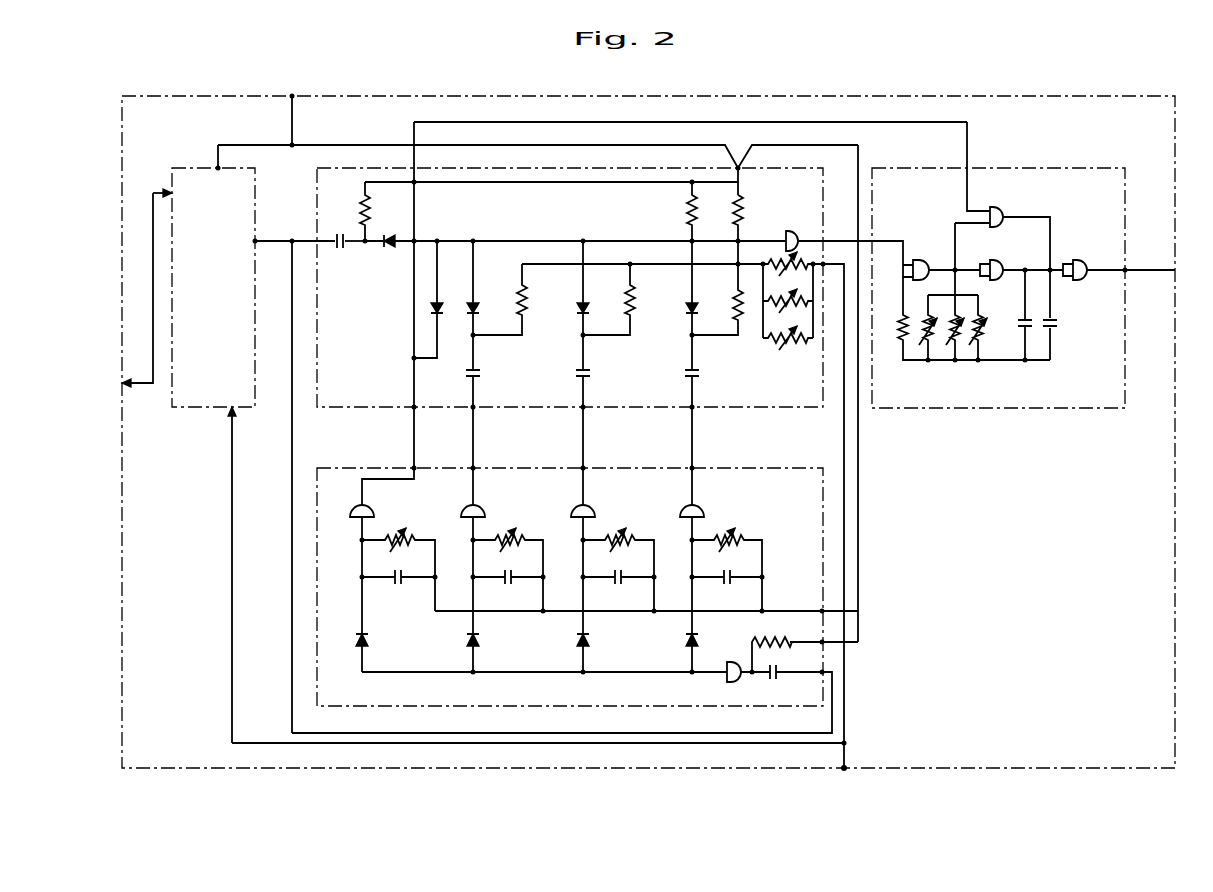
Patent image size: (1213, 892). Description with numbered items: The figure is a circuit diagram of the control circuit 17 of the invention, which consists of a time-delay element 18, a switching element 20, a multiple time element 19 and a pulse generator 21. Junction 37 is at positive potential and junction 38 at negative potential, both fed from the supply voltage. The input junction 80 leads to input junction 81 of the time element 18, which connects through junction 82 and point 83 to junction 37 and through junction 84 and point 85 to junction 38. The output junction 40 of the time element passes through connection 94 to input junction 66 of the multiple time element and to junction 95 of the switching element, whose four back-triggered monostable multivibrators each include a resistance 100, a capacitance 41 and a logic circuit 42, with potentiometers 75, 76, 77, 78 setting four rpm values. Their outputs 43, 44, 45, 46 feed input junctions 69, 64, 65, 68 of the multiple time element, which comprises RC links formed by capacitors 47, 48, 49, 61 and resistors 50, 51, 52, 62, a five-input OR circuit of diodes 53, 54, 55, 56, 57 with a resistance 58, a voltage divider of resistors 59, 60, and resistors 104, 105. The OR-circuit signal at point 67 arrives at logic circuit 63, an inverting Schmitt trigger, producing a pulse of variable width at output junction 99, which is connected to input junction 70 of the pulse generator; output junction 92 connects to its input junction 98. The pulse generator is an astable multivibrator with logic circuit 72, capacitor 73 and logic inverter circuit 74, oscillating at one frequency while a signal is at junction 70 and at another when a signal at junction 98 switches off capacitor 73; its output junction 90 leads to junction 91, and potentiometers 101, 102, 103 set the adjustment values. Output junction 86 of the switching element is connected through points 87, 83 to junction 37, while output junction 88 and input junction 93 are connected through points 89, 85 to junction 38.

The control circuit 17 is at (1073, 767).
The time-delay element 18 is at (174, 406).
The multiple time element 19 is at (570, 287).
The switching element 20 is at (819, 473).
The pulse generator 21 is at (1121, 172).
The output junction 37 is at (294, 99).
The output junction 38 is at (846, 767).
The output junction 40 is at (257, 247).
The capacitance 41 is at (775, 678).
The logic circuit 42 is at (736, 681).
The output junction 43 is at (694, 470).
The output junction 44 is at (585, 470).
The output junction 45 is at (475, 470).
The output junction 46 is at (414, 470).
The capacitor 47 is at (696, 376).
The capacitor 48 is at (587, 376).
The capacitor 49 is at (476, 376).
The resistor 50 is at (525, 298).
The resistor 51 is at (633, 298).
The resistor 52 is at (735, 300).
The diode 53 is at (690, 311).
The diode 54 is at (580, 311).
The diode 55 is at (475, 306).
The diode 56 is at (439, 306).
The diode 57 is at (391, 237).
The resistance 58 is at (689, 204).
The resistor 59 is at (752, 229).
The resistor 60 is at (780, 266).
The capacitor 61 is at (342, 248).
The resistor 62 is at (369, 204).
The logic circuit 63 is at (796, 225).
The input junction 64 is at (585, 408).
The input junction 65 is at (475, 408).
The input junction 66 is at (318, 240).
The point 67 is at (689, 237).
The input junction 68 is at (416, 408).
The input junction 69 is at (694, 408).
The input junction 70 is at (873, 240).
The logic circuit 72 is at (1004, 222).
The capacitor 73 is at (1058, 324).
The logic inverter circuit 74 is at (1081, 262).
The potentiometer 75 is at (728, 538).
The potentiometer 76 is at (399, 538).
The potentiometer 77 is at (509, 538).
The potentiometer 78 is at (619, 538).
The input junction 80 is at (126, 384).
The input junction 81 is at (168, 191).
The junction 82 is at (220, 172).
The point 83 is at (291, 145).
The junction 84 is at (230, 416).
The point 85 is at (847, 744).
The output junction 86 is at (820, 642).
The point 87 is at (741, 171).
The output junction 88 is at (820, 611).
The point 89 is at (859, 620).
The output junction 90 is at (1127, 269).
The junction 91 is at (1150, 284).
The output junction 92 is at (416, 184).
The input junction 93 is at (825, 266).
The connection 94 is at (291, 240).
The junction 95 is at (820, 671).
The input junction 98 is at (968, 174).
The output junction 99 is at (824, 240).
The resistance 100 is at (755, 647).
The potentiometer 101 is at (930, 345).
The potentiometer 102 is at (952, 348).
The potentiometer 103 is at (980, 348).
The resistor 104 is at (788, 301).
The resistor 105 is at (788, 346).